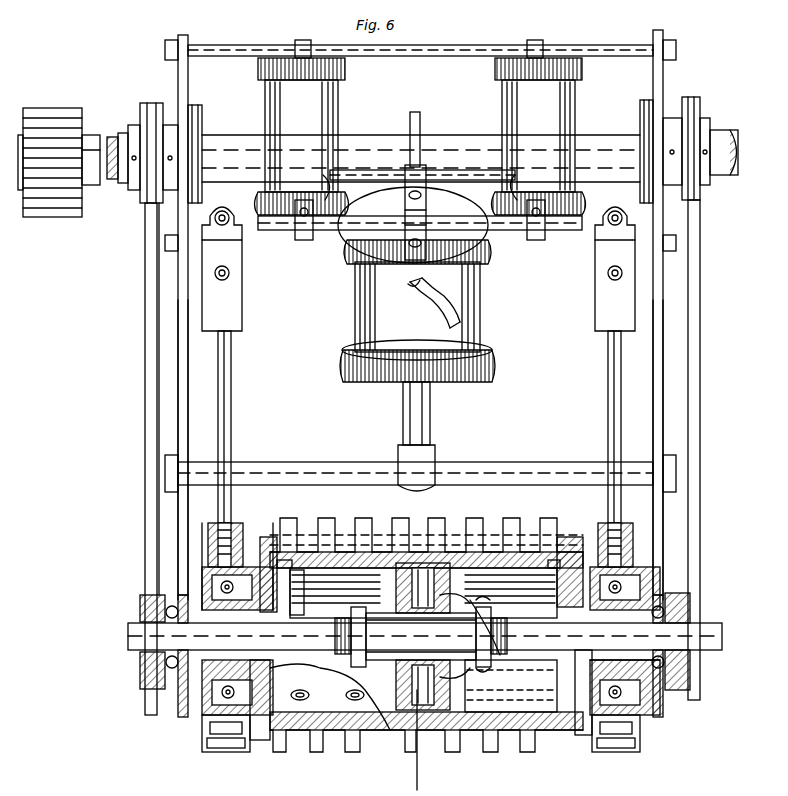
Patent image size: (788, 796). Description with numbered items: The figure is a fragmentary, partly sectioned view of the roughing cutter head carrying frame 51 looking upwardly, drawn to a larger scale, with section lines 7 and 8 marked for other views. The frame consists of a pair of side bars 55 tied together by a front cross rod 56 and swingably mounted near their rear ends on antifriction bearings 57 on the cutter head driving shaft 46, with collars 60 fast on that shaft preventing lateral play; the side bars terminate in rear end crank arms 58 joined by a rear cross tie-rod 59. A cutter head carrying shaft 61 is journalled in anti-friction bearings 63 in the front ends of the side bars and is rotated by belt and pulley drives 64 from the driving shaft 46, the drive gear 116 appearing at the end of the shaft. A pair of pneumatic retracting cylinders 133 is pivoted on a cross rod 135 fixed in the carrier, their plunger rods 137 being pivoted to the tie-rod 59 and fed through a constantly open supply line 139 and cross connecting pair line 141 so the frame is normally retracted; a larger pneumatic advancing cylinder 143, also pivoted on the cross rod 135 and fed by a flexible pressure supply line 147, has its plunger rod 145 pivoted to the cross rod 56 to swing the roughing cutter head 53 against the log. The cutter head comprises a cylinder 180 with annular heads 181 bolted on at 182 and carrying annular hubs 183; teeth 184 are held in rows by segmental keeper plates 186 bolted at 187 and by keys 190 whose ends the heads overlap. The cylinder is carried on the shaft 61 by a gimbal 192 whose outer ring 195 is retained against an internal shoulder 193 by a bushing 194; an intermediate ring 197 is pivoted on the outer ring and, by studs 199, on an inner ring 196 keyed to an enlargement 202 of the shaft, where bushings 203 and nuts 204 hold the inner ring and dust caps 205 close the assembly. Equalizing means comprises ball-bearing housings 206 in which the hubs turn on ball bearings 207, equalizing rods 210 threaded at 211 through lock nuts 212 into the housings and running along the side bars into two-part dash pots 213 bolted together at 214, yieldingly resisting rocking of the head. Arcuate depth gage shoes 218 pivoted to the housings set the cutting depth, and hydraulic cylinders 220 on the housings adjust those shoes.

The section line 7- 7 is at (612, 197).
The section line 8- 8 is at (413, 555).
The cutter head driving shaft 46 is at (735, 133).
The roughing cutter head carrying frame 51 is at (140, 343).
The roughing cutter head 53 is at (520, 755).
The side bars 55 is at (182, 373).
The front cross rod 56 is at (500, 462).
The antifriction bearings 57 is at (203, 112).
The rear end crank arms 58 is at (187, 40).
The rear cross tie-rod 59 is at (606, 45).
The collars 60 is at (170, 118).
The cutter head carrying shaft 61 is at (724, 634).
The anti-friction bearings 63 is at (172, 680).
The belt and pulley drives 64 is at (155, 408).
The drive gear 116 is at (60, 118).
The pneumatic retracting cylinders 133 is at (338, 100).
The cross rod 135 is at (345, 230).
The plunger rods 137 is at (305, 42).
The pressure supply line 139 is at (410, 152).
The cross connecting pair line 141 is at (462, 172).
The pneumatic advancing cylinder 143 is at (363, 312).
The plunger rod 145 is at (403, 418).
The pressure supply line 147 is at (440, 310).
The cylinder 180 is at (522, 712).
The annular heads 181 is at (575, 540).
The bolts 182 is at (262, 748).
The annular hubs 183 is at (228, 672).
The teeth 184 is at (515, 530).
The segmental keeper plates 186 is at (275, 530).
The bolts 187 is at (327, 695).
The keys 190 is at (318, 530).
The gimbal 192 is at (378, 583).
The internal shoulder 193 is at (472, 578).
The bushing 194 is at (292, 578).
The outer ring 195 is at (410, 760).
The inner ring 196 is at (405, 617).
The intermediate ring 197 is at (497, 622).
The studs 199 is at (436, 617).
The enlargement 202 is at (492, 660).
The bushings 203 is at (350, 672).
The nuts 204 is at (352, 638).
The dust caps 205 is at (470, 688).
The ball-bearing housings 206 is at (200, 582).
The ball bearings 207 is at (632, 697).
The equalizing rods 210 is at (231, 417).
The threaded connection 211 is at (218, 545).
The lock nuts 212 is at (235, 520).
The dash pots 213 is at (243, 312).
The bolts 214 is at (222, 226).
The depth gage shoes 218 is at (202, 745).
The hydraulic cylinders 220 is at (196, 794).